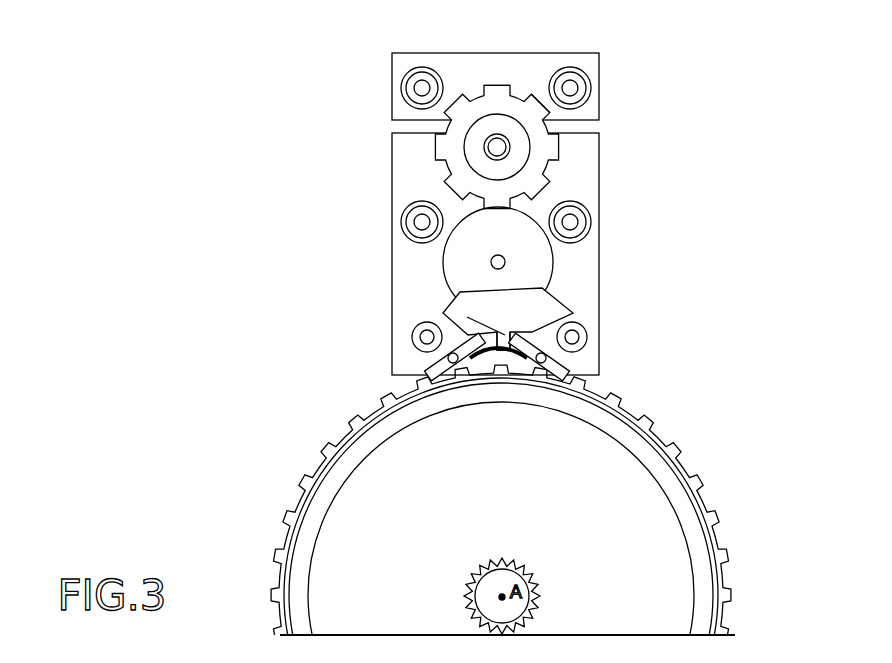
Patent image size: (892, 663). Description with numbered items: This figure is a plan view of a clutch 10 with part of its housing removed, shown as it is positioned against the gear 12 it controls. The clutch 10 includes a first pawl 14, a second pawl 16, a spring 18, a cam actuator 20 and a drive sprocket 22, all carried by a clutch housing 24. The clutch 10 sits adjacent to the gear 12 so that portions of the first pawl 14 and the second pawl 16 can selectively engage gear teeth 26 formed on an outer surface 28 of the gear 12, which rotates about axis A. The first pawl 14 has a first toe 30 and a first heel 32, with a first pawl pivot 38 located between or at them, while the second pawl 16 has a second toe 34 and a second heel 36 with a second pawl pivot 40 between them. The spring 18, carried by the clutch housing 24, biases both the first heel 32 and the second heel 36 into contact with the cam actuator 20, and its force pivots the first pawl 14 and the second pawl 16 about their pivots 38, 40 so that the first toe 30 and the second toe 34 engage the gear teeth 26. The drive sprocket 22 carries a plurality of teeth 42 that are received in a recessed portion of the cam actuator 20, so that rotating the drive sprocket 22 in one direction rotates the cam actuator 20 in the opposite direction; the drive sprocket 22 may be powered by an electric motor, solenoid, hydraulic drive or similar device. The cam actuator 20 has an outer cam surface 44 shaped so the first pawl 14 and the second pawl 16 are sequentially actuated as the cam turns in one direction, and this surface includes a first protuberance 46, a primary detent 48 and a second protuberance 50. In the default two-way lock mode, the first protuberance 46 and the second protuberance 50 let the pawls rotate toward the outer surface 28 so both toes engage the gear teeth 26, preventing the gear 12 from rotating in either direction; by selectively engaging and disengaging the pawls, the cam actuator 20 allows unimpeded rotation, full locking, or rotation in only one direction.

The clutch 10 is at (660, 135).
The gear 12 is at (315, 597).
The first pawl 14 is at (569, 362).
The second pawl 16 is at (427, 360).
The spring 18 is at (487, 357).
The cam actuator 20 is at (553, 264).
The drive sprocket 22 is at (433, 170).
The clutch housing 24 is at (392, 228).
The gear teeth 26 is at (712, 507).
The outer surface 28 is at (338, 438).
The first toe 30 is at (583, 378).
The first heel 32 is at (577, 322).
The second toe 34 is at (408, 377).
The second heel 36 is at (420, 322).
The first pawl pivot 38 is at (582, 338).
The second pawl pivot 40 is at (412, 338).
The teeth 42 is at (536, 88).
The outer cam surface 44 is at (498, 291).
The first protuberance 46 is at (541, 320).
The primary detent 48 is at (512, 332).
The second protuberance 50 is at (494, 325).